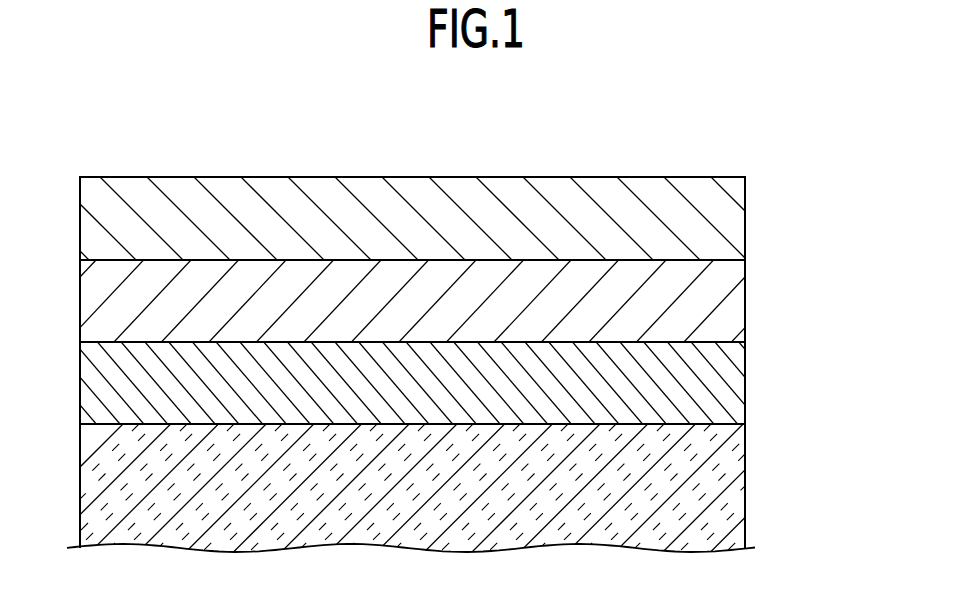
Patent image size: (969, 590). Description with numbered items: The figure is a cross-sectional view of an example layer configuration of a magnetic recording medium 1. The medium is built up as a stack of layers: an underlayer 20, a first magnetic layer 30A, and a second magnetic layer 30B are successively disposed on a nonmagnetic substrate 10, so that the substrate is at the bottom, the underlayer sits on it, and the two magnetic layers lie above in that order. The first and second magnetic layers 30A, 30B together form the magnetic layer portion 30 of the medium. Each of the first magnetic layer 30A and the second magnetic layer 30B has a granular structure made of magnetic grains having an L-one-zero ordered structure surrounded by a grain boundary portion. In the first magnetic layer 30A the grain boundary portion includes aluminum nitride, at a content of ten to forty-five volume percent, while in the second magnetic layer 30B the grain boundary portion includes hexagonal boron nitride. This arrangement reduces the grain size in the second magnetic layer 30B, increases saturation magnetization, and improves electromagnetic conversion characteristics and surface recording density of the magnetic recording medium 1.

The magnetic recording medium 1 is at (742, 154).
The nonmagnetic substrate 10 is at (723, 463).
The underlayer 20 is at (725, 382).
The upper layer stack 30 is at (447, 259).
The first magnetic layer 30A is at (423, 301).
The second magnetic layer 30B is at (724, 218).